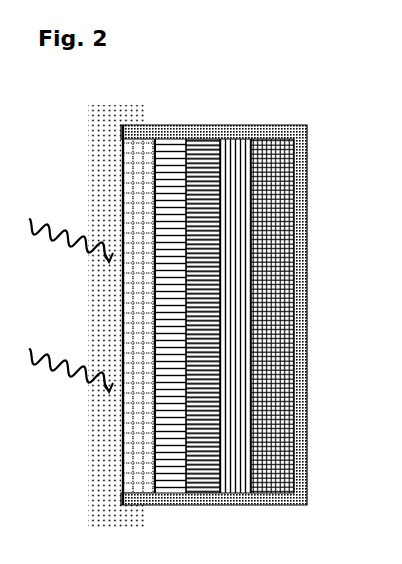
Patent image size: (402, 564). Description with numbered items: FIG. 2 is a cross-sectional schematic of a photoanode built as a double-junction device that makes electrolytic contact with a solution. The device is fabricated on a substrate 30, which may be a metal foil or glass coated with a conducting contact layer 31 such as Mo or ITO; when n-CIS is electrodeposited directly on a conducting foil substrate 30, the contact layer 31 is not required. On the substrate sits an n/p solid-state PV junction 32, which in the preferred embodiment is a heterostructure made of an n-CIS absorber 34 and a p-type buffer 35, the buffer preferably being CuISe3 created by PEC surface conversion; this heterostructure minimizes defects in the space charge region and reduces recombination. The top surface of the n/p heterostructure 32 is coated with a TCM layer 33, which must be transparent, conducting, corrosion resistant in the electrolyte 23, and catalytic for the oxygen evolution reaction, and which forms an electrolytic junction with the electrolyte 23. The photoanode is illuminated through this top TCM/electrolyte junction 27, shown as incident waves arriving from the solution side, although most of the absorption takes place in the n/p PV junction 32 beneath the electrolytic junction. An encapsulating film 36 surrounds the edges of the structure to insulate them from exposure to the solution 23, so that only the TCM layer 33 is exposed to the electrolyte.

The electrolyte 23 is at (103, 289).
The TCM/electrolyte junction 27 is at (133, 128).
The substrate 30 is at (272, 417).
The conducting contact layer 31 is at (226, 470).
The n/p solid-state PV junction 32 is at (160, 125).
The TCM layer 33 is at (122, 470).
The n-CIS absorber 34 is at (192, 470).
The p-type buffer 35 is at (158, 470).
The encapsulating film 36 is at (297, 200).